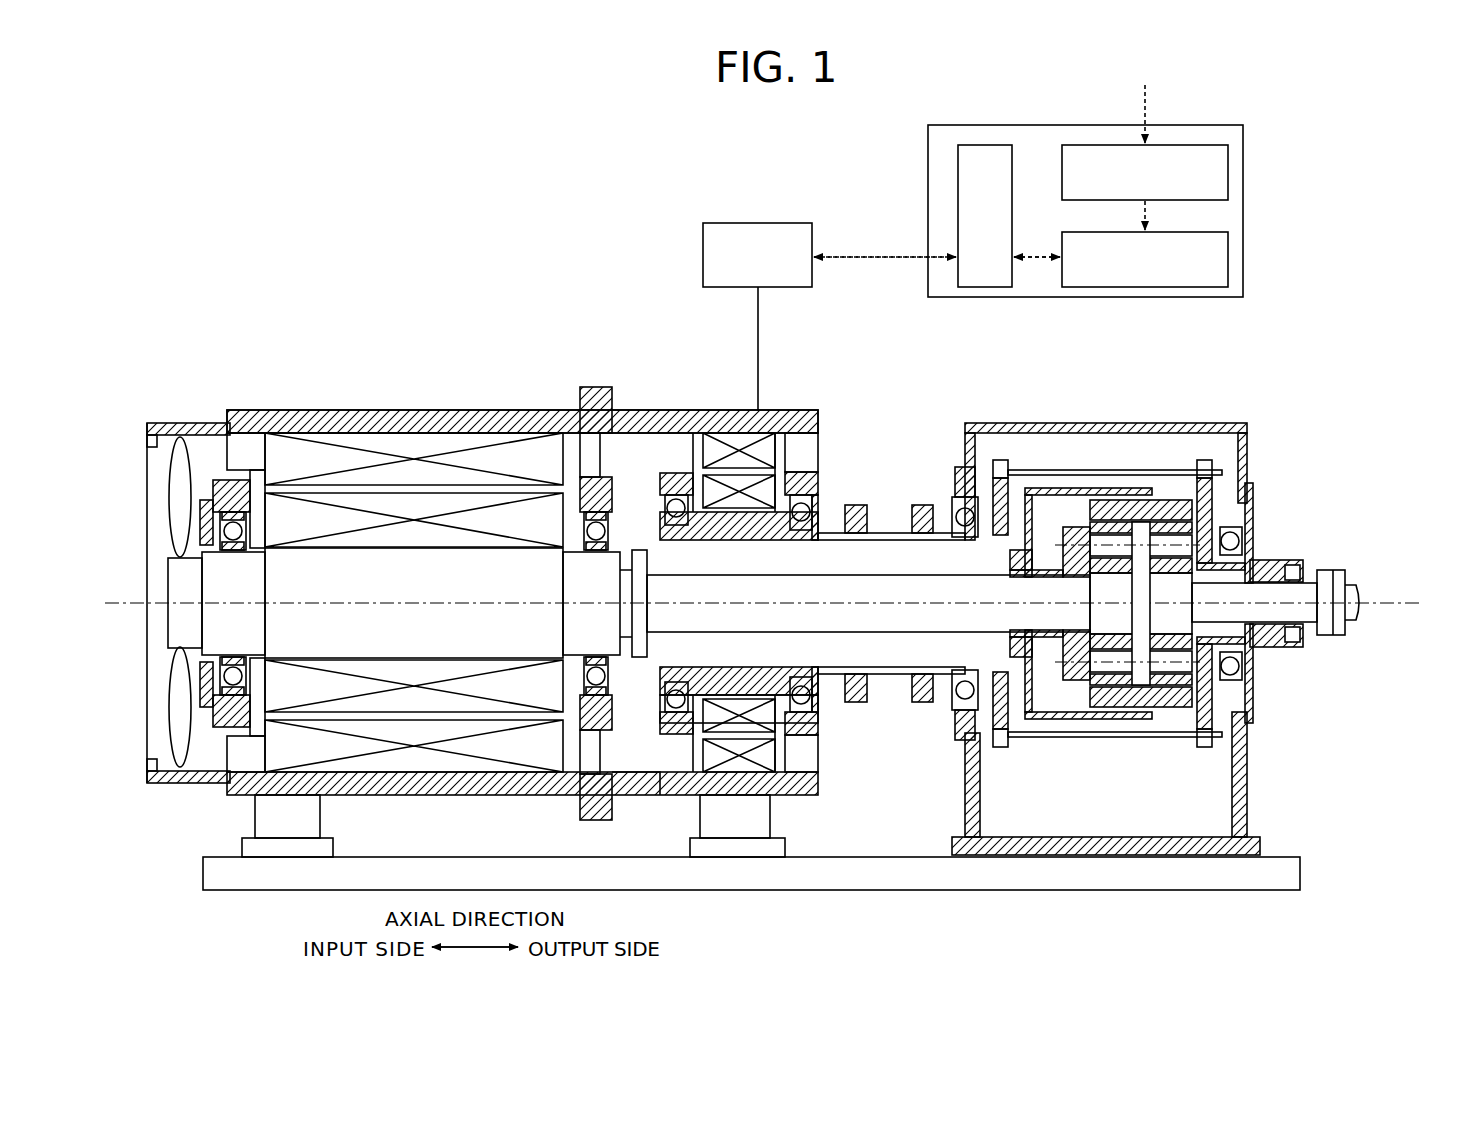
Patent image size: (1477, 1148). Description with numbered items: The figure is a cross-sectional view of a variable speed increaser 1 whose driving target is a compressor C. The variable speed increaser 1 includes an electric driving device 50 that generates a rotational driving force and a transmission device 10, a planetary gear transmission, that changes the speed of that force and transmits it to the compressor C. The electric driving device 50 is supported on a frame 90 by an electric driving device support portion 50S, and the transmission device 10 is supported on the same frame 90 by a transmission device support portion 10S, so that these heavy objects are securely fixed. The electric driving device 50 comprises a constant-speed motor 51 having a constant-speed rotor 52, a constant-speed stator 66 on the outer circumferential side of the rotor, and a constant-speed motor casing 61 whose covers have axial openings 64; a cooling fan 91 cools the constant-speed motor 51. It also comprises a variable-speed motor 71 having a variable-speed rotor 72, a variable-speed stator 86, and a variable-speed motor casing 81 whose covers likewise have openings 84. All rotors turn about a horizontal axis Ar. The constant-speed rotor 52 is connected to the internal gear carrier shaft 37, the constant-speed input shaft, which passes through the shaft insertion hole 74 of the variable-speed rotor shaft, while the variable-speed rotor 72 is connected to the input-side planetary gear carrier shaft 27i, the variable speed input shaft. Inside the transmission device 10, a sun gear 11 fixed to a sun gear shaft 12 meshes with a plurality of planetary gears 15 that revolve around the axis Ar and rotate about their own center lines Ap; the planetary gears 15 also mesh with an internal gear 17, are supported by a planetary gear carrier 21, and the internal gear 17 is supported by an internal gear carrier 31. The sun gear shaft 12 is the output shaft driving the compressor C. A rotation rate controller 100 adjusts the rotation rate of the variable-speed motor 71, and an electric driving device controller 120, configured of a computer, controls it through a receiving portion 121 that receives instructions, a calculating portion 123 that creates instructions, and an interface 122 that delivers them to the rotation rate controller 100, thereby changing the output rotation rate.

The variable speed increaser 1 is at (1322, 110).
The transmission device 10 is at (1245, 414).
The transmission device support portion 10S is at (1246, 796).
The sun gear 11 is at (1190, 610).
The sun gear shaft 12 is at (1310, 620).
The planetary gears 15 is at (1186, 525).
The internal gear 17 is at (1170, 505).
The planetary gear carrier 21 is at (1219, 482).
The input-side planetary gear carrier shaft 27i is at (990, 530).
The internal gear carrier 31 is at (1090, 720).
The internal gear carrier shaft 37 is at (993, 625).
The electric driving device 50 is at (338, 264).
The electric driving device support portion 50S is at (322, 813).
The constant-speed motor 51 is at (276, 406).
The constant-speed rotor 52 is at (510, 486).
The constant-speed motor casing 61 is at (455, 412).
The openings 64 is at (230, 452).
The constant-speed stator 66 is at (340, 455).
The variable-speed motor 71 is at (803, 411).
The variable-speed rotor 72 is at (745, 690).
The shaft insertion hole 74 is at (645, 548).
The variable-speed motor casing 81 is at (625, 790).
The openings 84 is at (672, 446).
The variable-speed stator 86 is at (716, 762).
The frame 90 is at (1280, 877).
The cooling fan 91 is at (180, 752).
The rotation rate controller 100 is at (815, 274).
The electric driving device controller 120 is at (1214, 122).
The receiving portion 121 is at (1228, 170).
The interface 122 is at (1000, 145).
The calculating portion 123 is at (1228, 258).
The center lines of planetary gears Ap is at (1205, 530).
The axis Ar is at (1385, 602).
The compressor C is at (1335, 575).